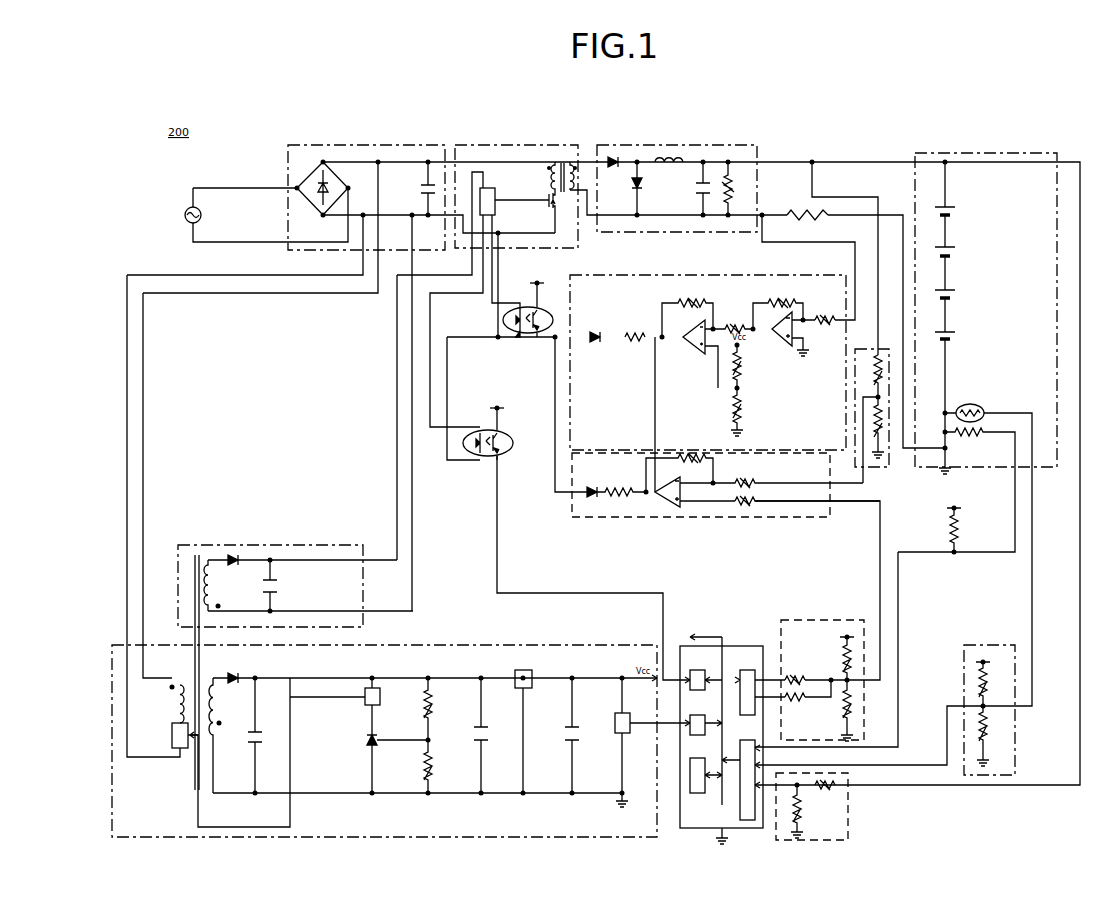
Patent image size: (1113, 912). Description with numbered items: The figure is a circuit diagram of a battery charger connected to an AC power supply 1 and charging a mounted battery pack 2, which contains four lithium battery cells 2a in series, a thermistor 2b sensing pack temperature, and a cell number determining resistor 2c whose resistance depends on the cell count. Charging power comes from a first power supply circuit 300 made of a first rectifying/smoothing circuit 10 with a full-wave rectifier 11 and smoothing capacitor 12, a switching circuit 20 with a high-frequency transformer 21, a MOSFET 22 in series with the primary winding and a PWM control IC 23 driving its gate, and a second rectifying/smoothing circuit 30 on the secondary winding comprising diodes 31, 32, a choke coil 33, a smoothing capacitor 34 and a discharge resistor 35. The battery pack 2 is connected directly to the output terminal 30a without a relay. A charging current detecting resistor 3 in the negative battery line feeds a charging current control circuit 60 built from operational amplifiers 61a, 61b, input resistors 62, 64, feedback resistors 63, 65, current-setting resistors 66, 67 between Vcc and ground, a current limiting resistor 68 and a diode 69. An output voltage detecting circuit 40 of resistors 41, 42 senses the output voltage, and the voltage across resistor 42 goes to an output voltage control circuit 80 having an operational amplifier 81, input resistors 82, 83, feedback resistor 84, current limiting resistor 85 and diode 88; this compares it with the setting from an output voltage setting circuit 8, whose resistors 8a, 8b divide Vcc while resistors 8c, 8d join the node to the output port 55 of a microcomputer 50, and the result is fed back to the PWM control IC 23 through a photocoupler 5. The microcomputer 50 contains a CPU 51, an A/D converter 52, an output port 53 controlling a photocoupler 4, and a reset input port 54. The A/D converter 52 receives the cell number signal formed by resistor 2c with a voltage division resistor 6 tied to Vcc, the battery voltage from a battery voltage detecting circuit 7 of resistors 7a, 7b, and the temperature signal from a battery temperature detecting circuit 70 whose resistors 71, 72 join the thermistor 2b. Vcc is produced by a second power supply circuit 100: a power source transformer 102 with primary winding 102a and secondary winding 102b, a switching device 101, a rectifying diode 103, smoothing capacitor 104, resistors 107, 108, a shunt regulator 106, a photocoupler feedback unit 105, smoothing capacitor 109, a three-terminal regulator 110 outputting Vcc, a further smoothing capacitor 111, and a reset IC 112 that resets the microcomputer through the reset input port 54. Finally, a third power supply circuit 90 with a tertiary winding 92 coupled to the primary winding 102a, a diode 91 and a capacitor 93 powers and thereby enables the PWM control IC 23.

The AC power supply 1 is at (199, 210).
The first rectifying/smoothing circuit 10 is at (447, 147).
The full-wave rectifier 11 is at (314, 180).
The smoothing capacitor 12 is at (420, 186).
The switching circuit 20 is at (520, 147).
The high-frequency transformer 21 is at (563, 160).
The MOSFET 22 is at (559, 212).
The PWM control IC 23 is at (493, 189).
The first power supply circuit 300 is at (604, 141).
The second rectifying/smoothing circuit 30 is at (652, 147).
The output terminal 30a is at (813, 160).
The diode 31 is at (612, 169).
The diode 32 is at (644, 194).
The choke coil 33 is at (669, 171).
The smoothing capacitor 34 is at (700, 194).
The discharge resistor 35 is at (733, 190).
The charging current detecting resistor 3 is at (803, 210).
The battery pack 2 is at (960, 154).
The lithium battery cells 2a is at (934, 206).
The thermistor 2b is at (970, 403).
The cell number determining resistor 2c is at (973, 437).
The photocoupler 4 is at (478, 428).
The photocoupler 5 is at (519, 307).
The voltage division resistor 6 is at (948, 529).
The output voltage detecting circuit 40 is at (872, 350).
The resistor 41 is at (874, 378).
The resistor 42 is at (874, 423).
The charging current control circuit 60 is at (638, 276).
The operational amplifier 61a is at (776, 342).
The operational amplifier 61b is at (697, 348).
The input resistor 62 is at (825, 317).
The feedback resistor 63 is at (778, 313).
The input resistor 64 is at (733, 325).
The feedback resistor 65 is at (687, 317).
The resistor 66 is at (740, 360).
The resistor 67 is at (740, 403).
The current limiting resistor 68 is at (636, 332).
The diode 69 is at (593, 331).
The output voltage control circuit 80 is at (826, 482).
The operational amplifier 81 is at (666, 502).
The input resistor 82 is at (746, 478).
The input resistor 83 is at (804, 507).
The feedback resistor 84 is at (694, 460).
The current limiting resistor 85 is at (621, 502).
The diode 88 is at (592, 499).
The third power supply circuit 90 is at (314, 547).
The diode 91 is at (235, 567).
The tertiary winding 92 is at (214, 580).
The capacitor 93 is at (278, 590).
The second power supply circuit 100 is at (448, 647).
The switching device 101 is at (172, 722).
The power source transformer 102 is at (191, 631).
The primary winding 102a is at (180, 685).
The secondary winding 102b is at (226, 735).
The rectifying diode 103 is at (233, 671).
The smoothing capacitor 104 is at (270, 729).
The feedback unit (photocoupler) 105 is at (364, 704).
The shunt regulator 106 is at (367, 742).
The resistor 107 is at (424, 705).
The resistor 108 is at (424, 766).
The smoothing capacitor 109 is at (485, 738).
The 3-terminal regulator 110 is at (531, 673).
The capacitor 111 is at (575, 718).
The reset IC 112 is at (630, 734).
The microcomputer 50 is at (752, 646).
The CPU 51 is at (694, 766).
The A/D converter 52 is at (750, 743).
The output port 53 is at (699, 672).
The reset input port 54 is at (699, 717).
The output port 55 is at (744, 672).
The battery voltage detecting circuit 7 is at (848, 783).
The resistor 7a is at (824, 792).
The resistor 7b is at (803, 812).
The output voltage setting circuit 8 is at (780, 620).
The resistor 8a is at (835, 657).
The resistor 8b is at (842, 706).
The resistor 8c is at (794, 676).
The resistor 8d is at (795, 702).
The battery temperature detecting circuit 70 is at (982, 646).
The resistor 71 is at (990, 684).
The resistor 72 is at (989, 722).